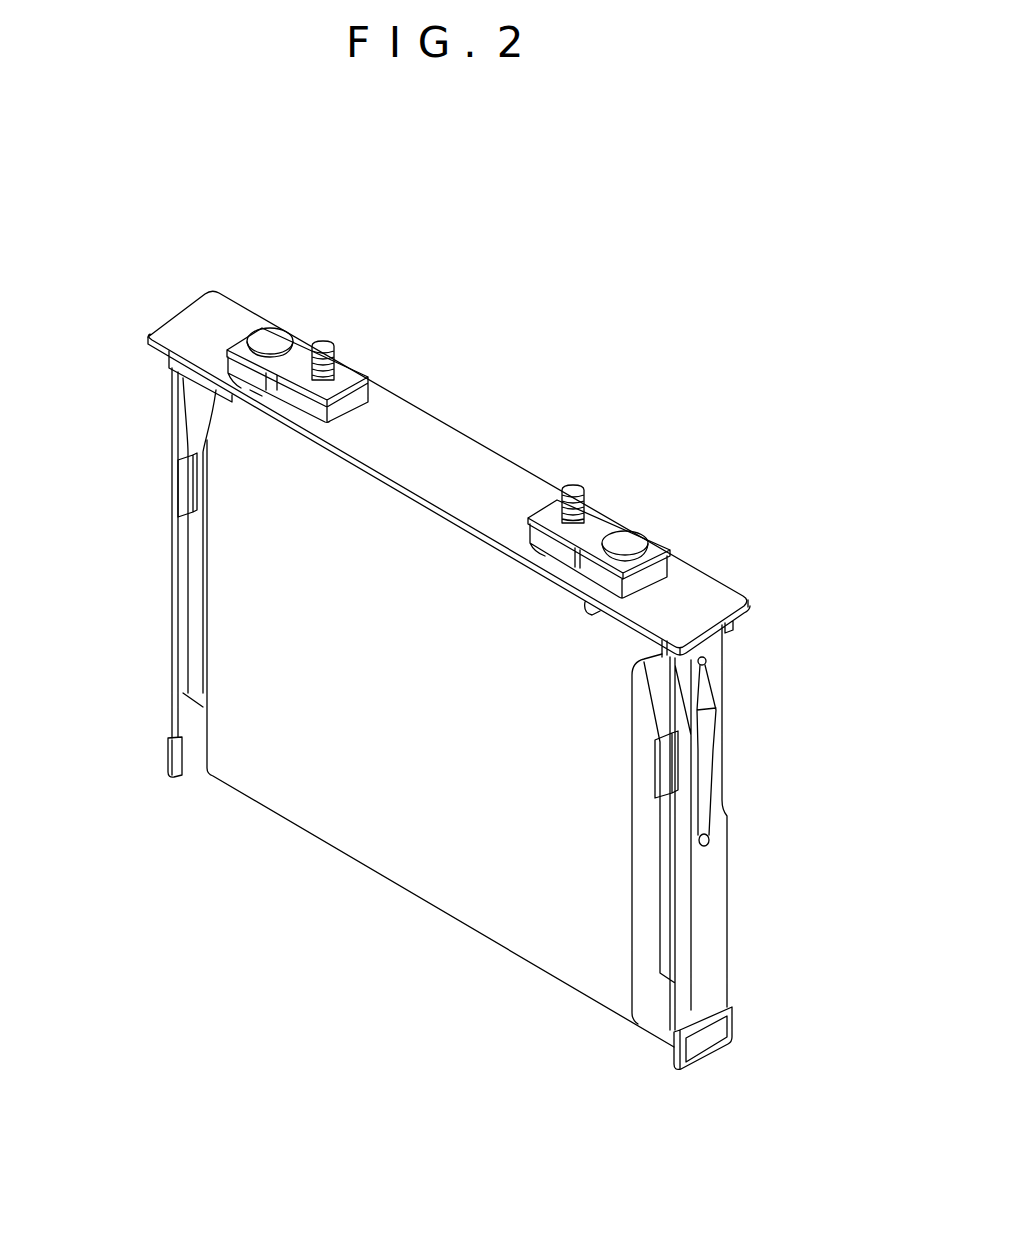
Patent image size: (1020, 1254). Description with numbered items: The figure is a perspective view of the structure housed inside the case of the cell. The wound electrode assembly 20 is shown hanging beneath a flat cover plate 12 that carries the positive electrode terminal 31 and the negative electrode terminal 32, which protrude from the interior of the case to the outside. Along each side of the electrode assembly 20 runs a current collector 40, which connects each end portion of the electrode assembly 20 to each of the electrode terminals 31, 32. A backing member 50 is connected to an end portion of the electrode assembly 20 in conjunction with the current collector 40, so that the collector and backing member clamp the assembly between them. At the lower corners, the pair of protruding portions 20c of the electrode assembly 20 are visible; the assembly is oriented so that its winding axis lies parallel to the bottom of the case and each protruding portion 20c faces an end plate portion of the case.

The cover plate 12 is at (695, 602).
The electrode assembly 20 is at (420, 846).
The protruding portion 20c is at (186, 750).
The positive electrode terminal 31 is at (308, 308).
The negative electrode terminal 32 is at (622, 492).
The current collector 40 is at (151, 424).
The backing member 50 is at (186, 483).